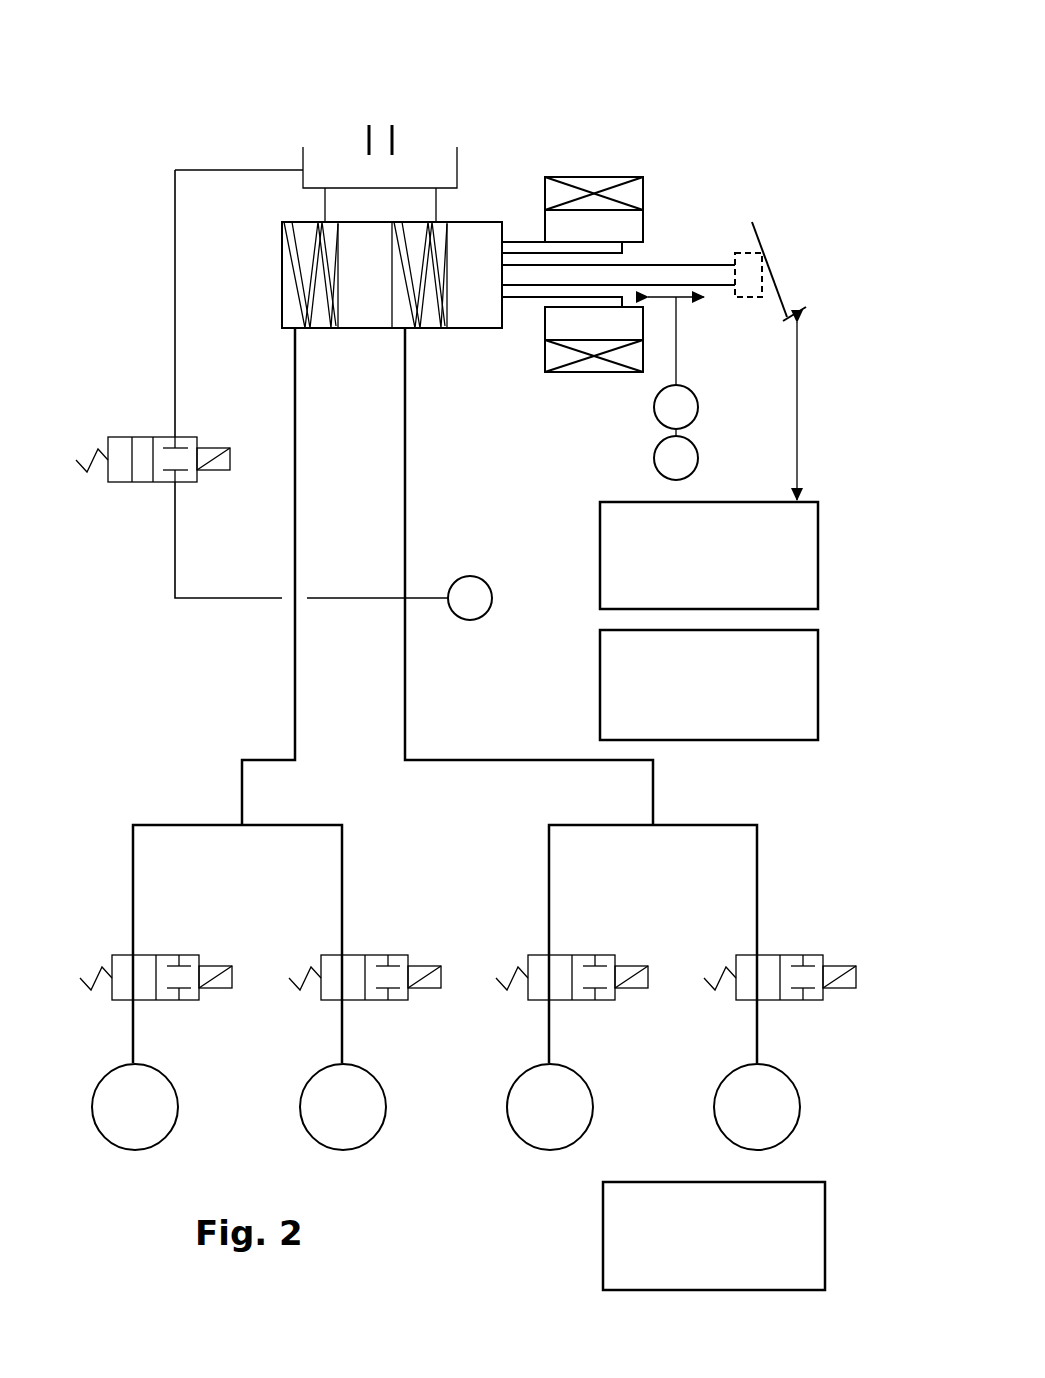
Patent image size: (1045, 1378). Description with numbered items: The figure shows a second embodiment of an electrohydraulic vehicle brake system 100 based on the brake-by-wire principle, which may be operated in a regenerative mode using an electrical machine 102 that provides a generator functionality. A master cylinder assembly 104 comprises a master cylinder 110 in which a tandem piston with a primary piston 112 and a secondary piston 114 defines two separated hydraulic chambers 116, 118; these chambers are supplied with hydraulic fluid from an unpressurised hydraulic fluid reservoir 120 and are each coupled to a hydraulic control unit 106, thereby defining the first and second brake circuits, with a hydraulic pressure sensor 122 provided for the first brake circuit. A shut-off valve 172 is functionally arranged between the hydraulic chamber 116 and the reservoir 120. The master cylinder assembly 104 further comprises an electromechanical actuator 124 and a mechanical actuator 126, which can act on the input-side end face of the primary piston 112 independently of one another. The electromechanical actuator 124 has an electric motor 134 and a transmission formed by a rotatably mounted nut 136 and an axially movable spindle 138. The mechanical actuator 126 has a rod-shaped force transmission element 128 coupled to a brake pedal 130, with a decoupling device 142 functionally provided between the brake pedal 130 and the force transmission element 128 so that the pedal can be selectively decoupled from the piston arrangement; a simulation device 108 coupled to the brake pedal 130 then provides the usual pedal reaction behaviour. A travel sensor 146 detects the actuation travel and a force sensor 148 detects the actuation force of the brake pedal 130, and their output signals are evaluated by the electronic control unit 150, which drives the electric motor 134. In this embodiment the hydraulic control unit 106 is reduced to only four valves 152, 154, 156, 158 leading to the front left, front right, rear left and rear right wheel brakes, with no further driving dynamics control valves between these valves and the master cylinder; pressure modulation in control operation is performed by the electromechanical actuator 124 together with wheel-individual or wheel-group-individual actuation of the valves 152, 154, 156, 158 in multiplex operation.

The vehicle brake system 100 is at (139, 45).
The electrical machine 102 is at (603, 1222).
The master cylinder assembly 104 is at (480, 110).
The hydraulic control unit 106 is at (198, 790).
The simulation device 108 is at (600, 558).
The master cylinder 110 is at (418, 362).
The primary piston 112 is at (452, 287).
The secondary piston 114 is at (377, 287).
The hydraulic chamber 116 is at (400, 322).
The hydraulic chamber 118 is at (293, 320).
The hydraulic fluid reservoir 120 is at (348, 168).
The hydraulic pressure sensor 122 is at (485, 580).
The electromechanical actuator 124 is at (575, 165).
The mechanical actuator 126 is at (750, 192).
The force transmission element 128 is at (675, 275).
The brake pedal 130 is at (773, 283).
The electric motor 134 is at (597, 353).
The nut 136 is at (632, 232).
The spindle 138 is at (523, 307).
The decoupling device 142 is at (750, 283).
The travel sensor 146 is at (688, 413).
The force sensor 148 is at (688, 458).
The control unit 150 is at (600, 677).
The valve 152 is at (200, 955).
The valve 154 is at (410, 955).
The valve 156 is at (617, 955).
The valve 158 is at (824, 955).
The valve 172 is at (196, 437).